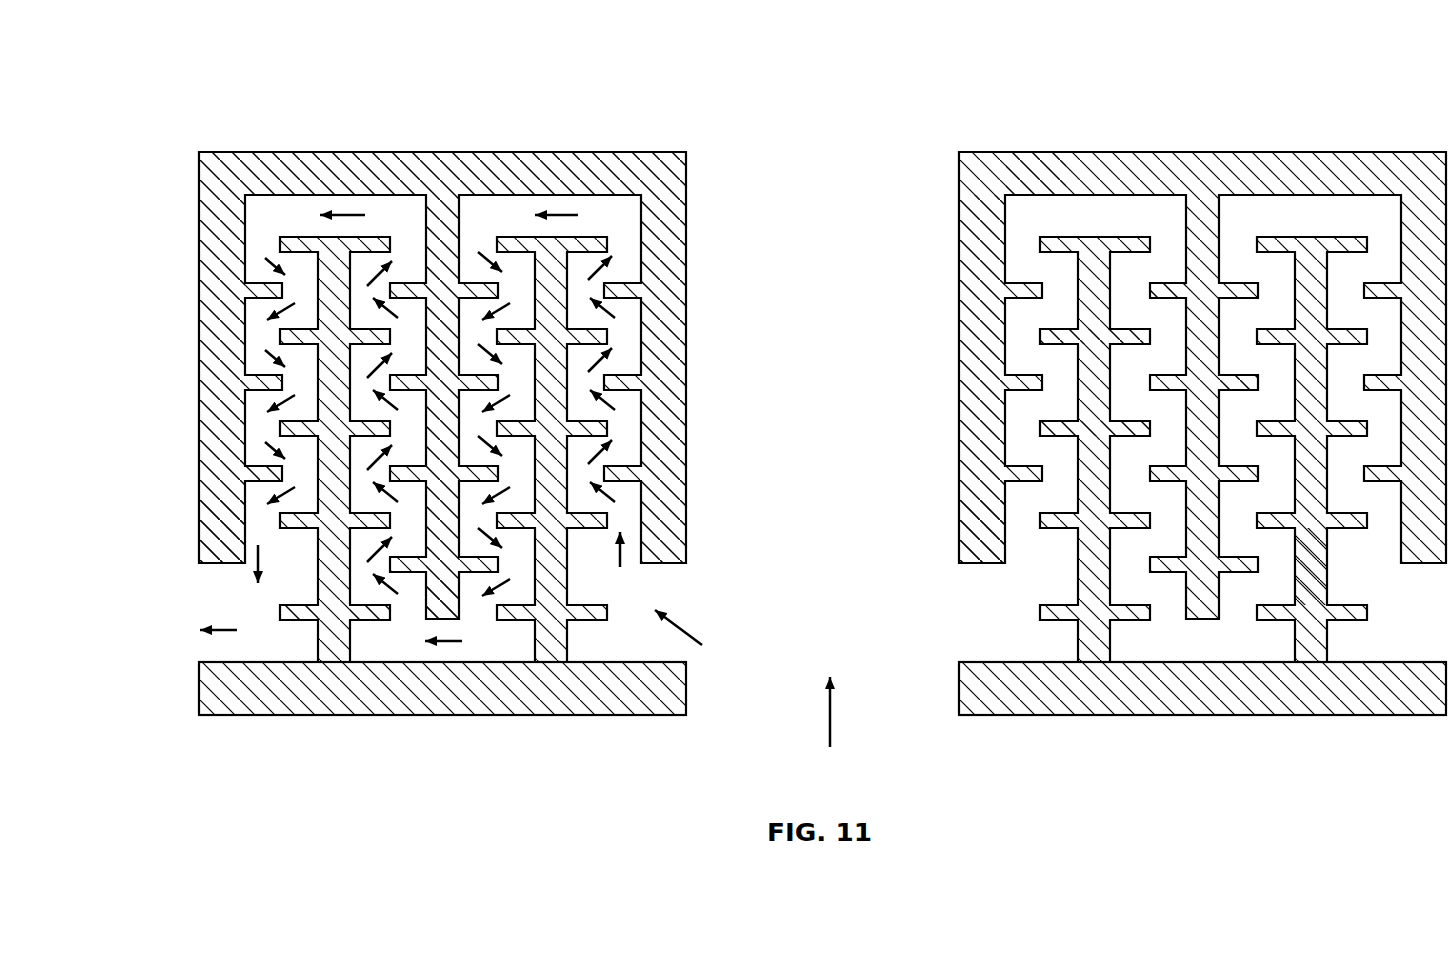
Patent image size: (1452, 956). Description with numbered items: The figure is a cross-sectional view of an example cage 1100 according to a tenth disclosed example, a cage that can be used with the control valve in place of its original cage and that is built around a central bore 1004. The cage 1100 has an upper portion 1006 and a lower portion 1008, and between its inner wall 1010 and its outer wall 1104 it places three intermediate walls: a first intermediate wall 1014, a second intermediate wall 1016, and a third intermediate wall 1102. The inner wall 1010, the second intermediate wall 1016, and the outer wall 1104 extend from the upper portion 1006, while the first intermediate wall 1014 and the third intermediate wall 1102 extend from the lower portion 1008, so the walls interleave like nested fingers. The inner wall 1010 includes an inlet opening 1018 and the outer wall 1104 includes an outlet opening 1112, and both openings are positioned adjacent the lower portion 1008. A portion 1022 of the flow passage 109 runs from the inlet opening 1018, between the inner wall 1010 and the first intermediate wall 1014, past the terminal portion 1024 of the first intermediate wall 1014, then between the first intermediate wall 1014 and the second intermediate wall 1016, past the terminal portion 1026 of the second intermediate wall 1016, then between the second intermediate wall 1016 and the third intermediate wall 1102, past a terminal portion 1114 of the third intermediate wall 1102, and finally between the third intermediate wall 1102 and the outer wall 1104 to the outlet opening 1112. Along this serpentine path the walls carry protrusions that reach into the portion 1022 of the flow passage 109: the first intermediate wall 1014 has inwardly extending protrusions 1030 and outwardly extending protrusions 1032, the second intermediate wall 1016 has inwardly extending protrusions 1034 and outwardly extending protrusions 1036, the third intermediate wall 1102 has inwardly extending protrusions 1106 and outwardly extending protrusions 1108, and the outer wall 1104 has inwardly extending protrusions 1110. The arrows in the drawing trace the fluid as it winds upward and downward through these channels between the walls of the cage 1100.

The cage 1100 is at (252, 70).
The upper portion 1006 is at (305, 178).
The terminal portion 1114 is at (368, 232).
The terminal portion 1024 is at (588, 230).
The second intermediate wall 1016 is at (452, 428).
The outer wall 1104 is at (226, 376).
The inwardly extending protrusions 1110 is at (264, 474).
The outlet opening 1112 is at (224, 533).
The inner wall 1010 is at (670, 502).
The outwardly extending protrusions 1108 is at (307, 612).
The inwardly extending protrusions 1106 is at (358, 612).
The lower portion 1008 is at (472, 693).
The terminal portion 1026 is at (448, 618).
The flow passage 109 is at (1103, 212).
The inwardly extending protrusions 1034 is at (1168, 280).
The outwardly extending protrusions 1036 is at (1238, 370).
The portion of the flow passage 1022 is at (1030, 206).
The outwardly extending protrusions 1032 is at (1115, 336).
The inwardly extending protrusions 1030 is at (1050, 430).
The central bore 1004 is at (958, 483).
The inlet opening 1018 is at (967, 548).
The first intermediate wall 1014 is at (1092, 653).
The third intermediate wall 1102 is at (1313, 577).